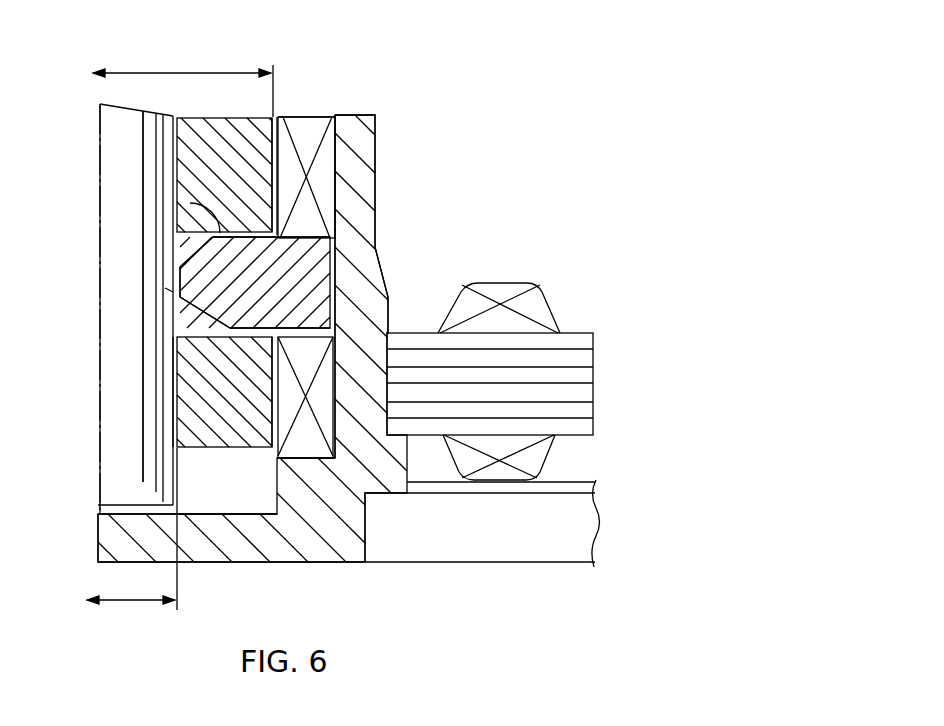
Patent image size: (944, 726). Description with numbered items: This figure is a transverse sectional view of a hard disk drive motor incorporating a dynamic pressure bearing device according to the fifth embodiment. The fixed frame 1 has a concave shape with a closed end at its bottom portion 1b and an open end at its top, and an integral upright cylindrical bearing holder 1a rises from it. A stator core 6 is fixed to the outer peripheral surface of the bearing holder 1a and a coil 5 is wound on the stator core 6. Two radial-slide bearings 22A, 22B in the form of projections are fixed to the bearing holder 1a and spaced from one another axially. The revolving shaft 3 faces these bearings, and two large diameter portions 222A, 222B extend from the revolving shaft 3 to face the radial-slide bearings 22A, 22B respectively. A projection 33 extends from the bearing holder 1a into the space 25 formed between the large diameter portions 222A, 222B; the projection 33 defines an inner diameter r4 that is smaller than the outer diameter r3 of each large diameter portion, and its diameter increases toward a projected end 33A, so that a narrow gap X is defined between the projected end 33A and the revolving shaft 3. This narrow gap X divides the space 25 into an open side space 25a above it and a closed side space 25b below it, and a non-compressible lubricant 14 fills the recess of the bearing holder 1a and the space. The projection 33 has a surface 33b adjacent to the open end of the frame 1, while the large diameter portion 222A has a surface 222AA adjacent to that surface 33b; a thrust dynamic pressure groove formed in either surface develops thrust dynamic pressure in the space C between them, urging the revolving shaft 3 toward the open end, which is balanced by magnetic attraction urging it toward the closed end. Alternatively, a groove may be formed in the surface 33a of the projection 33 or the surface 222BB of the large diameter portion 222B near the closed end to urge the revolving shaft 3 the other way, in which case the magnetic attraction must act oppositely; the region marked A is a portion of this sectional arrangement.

The frame 1 is at (338, 567).
The bearing holder 1a is at (370, 262).
The yoke bottom portion 1b is at (107, 546).
The revolving shaft 3 is at (115, 248).
The coil 5 is at (547, 305).
The stator core 6 is at (590, 352).
The lubricant 14 is at (228, 510).
The radial-slide bearing 22A is at (293, 122).
The radial-slide bearing 22B is at (439, 452).
The space 25 is at (172, 265).
The open side space 25a is at (190, 250).
The closed side space 25b is at (175, 340).
The projection 33 is at (305, 250).
The surface of the projection 33a is at (185, 355).
The surface of the projection 33b is at (290, 240).
The projected end 33A is at (190, 310).
The large diameter portion 222A is at (218, 140).
The surface of the large diameter portion 222AA is at (268, 230).
The large diameter portion 222B is at (180, 400).
The surface of the large diameter portion 222BB is at (295, 312).
The gap region A is at (320, 113).
The space C is at (173, 197).
The narrow gap X is at (165, 292).
The outer diameter r3 is at (183, 83).
The inner diameter r4 is at (131, 588).